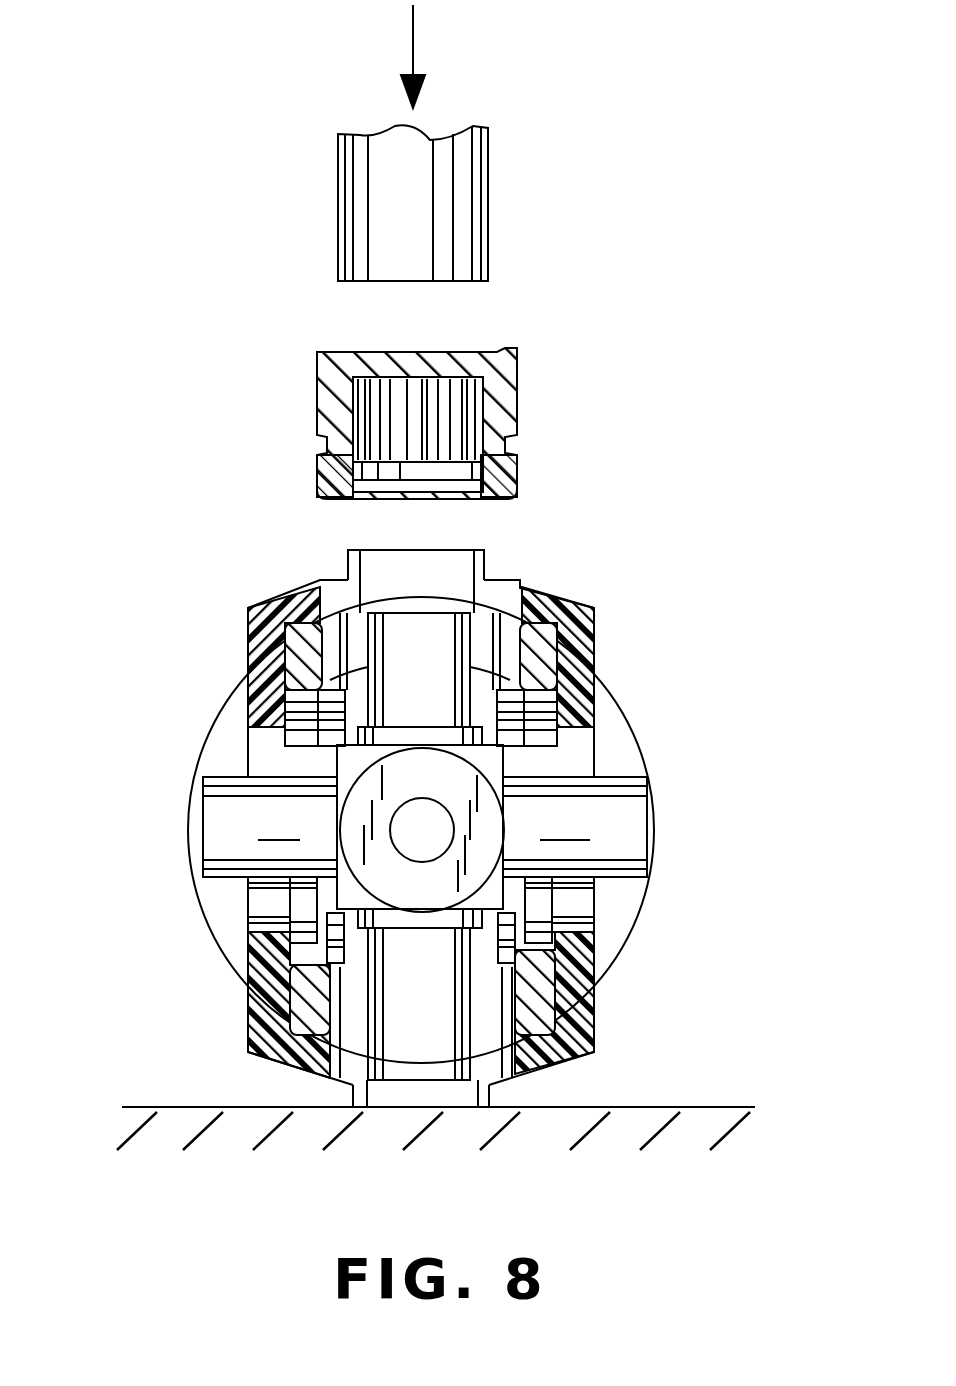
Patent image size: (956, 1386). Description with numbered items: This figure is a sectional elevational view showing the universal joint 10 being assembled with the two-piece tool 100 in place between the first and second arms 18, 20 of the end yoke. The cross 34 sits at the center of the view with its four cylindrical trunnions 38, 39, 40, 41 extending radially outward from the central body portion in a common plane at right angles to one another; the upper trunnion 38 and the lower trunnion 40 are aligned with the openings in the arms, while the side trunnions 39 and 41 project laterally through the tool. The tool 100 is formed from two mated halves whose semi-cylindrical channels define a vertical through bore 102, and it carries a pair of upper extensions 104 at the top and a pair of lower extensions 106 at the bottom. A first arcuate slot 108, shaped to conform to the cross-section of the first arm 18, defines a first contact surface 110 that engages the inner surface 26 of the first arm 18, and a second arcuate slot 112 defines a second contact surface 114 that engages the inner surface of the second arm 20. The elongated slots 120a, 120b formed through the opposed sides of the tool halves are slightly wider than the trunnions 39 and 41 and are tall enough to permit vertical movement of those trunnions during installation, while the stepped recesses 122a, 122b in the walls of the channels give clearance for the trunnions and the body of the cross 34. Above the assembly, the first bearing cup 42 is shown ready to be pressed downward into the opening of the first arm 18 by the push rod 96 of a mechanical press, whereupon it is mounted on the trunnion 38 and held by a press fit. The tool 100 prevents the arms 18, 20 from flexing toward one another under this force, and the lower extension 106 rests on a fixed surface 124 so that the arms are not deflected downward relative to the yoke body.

The universal joint 10 is at (695, 386).
The first arm 18 is at (540, 626).
The second arm 20 is at (560, 1050).
The inner surface 26 is at (560, 733).
The cross 34 is at (530, 772).
The trunnion 38 is at (400, 630).
The trunnion 39 is at (632, 833).
The trunnion 40 is at (395, 1047).
The trunnion 41 is at (225, 828).
The first bearing cup 42 is at (525, 380).
The push rod 96 is at (488, 173).
The tool 100 is at (600, 594).
The through bore 102 is at (337, 582).
The upper extensions 104 is at (450, 550).
The lower extensions 106 is at (458, 1110).
The first arcuate slot 108 is at (292, 656).
The first contact surface 110 is at (555, 672).
The second arcuate slot 112 is at (258, 1042).
The second contact surface 114 is at (262, 985).
The elongated slot 120a is at (578, 912).
The elongated slot 120b is at (247, 745).
The stepped recess 122a is at (565, 907).
The stepped recess 122b is at (300, 722).
The fixed surface 124 is at (715, 1108).